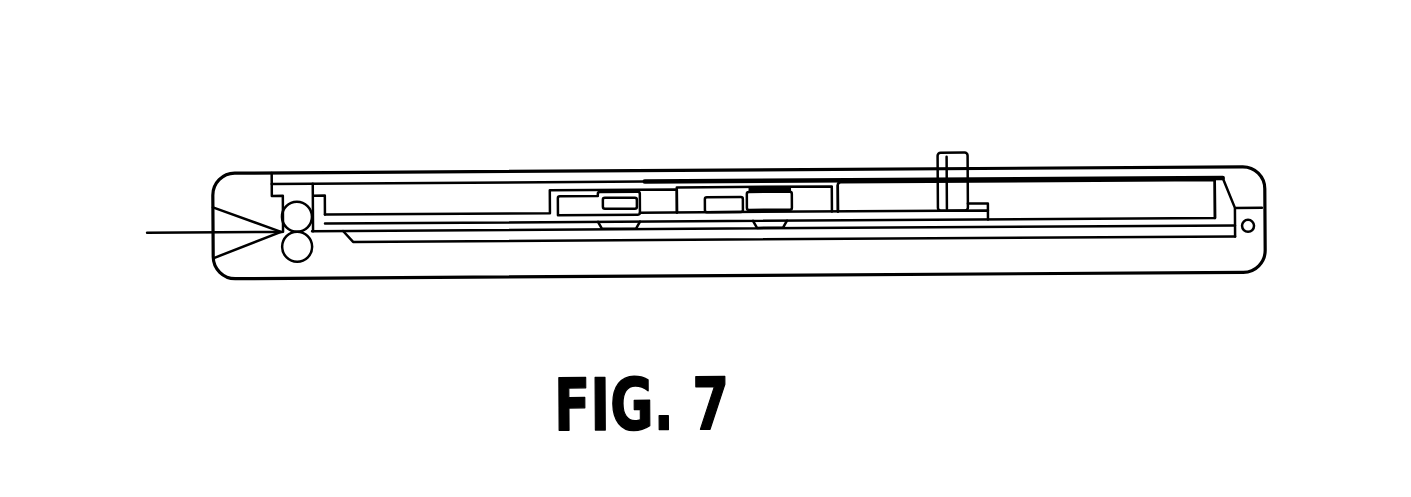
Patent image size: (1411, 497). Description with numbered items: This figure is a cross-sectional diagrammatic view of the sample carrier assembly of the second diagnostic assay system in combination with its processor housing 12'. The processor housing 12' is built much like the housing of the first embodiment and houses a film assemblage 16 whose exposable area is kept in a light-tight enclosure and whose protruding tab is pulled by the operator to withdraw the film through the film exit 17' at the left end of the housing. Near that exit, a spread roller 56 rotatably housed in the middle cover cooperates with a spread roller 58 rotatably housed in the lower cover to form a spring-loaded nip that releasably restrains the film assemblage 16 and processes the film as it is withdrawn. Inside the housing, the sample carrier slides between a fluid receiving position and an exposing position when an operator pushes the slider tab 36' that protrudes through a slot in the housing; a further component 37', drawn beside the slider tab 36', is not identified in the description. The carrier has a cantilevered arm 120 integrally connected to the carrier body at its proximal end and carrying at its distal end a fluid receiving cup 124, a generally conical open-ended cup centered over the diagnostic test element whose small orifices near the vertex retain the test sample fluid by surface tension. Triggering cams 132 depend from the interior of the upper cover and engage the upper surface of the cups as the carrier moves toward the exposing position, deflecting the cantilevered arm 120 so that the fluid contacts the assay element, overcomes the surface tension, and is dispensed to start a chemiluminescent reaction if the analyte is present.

The processor housing 12' is at (792, 151).
The film exit 17' is at (197, 206).
The film assemblage 16 is at (172, 232).
The spread roller 58 is at (296, 205).
The spread roller 56 is at (296, 254).
The cantilevered arm 120 is at (582, 189).
The triggering cam 132 is at (613, 184).
The fluid receiving cup 124 is at (720, 190).
The slider tab 36' is at (985, 145).
The tray 37' is at (1026, 154).